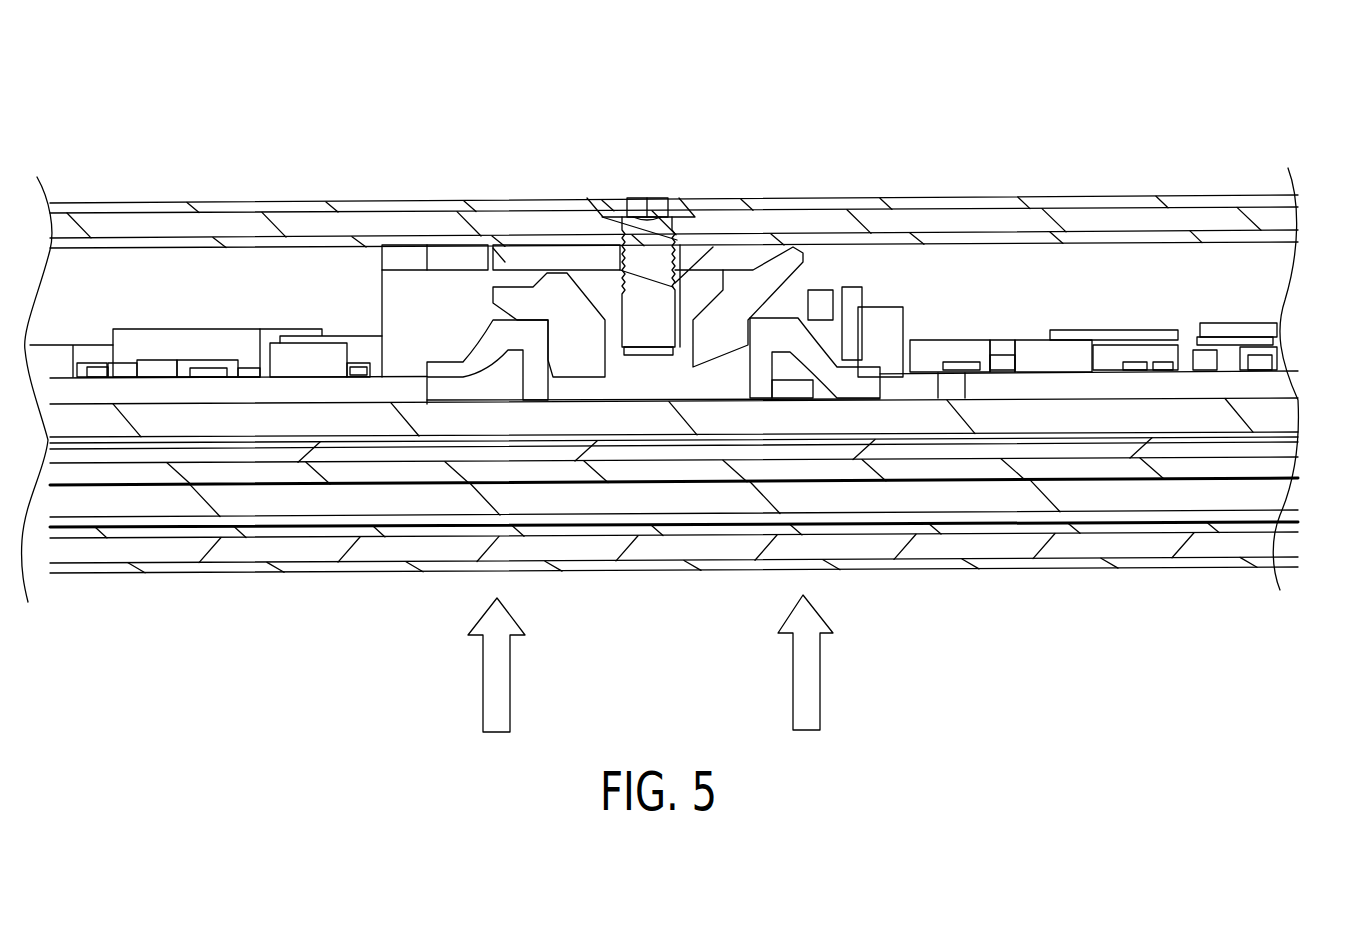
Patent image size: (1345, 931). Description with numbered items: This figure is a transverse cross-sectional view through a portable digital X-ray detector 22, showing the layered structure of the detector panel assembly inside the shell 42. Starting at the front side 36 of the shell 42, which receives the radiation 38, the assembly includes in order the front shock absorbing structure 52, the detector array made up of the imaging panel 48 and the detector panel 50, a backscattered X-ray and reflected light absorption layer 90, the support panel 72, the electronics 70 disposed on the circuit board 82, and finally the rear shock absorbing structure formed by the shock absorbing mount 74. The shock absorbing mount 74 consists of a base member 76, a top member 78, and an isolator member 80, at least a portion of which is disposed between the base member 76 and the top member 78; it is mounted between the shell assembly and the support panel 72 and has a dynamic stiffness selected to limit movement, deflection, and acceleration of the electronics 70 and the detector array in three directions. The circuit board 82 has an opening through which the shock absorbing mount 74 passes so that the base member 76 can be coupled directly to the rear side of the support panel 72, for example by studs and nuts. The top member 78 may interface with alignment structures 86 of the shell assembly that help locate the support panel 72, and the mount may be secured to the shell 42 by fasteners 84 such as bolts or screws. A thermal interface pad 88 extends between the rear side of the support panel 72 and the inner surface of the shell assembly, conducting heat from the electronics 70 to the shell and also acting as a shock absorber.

The detector 22 is at (507, 108).
The front side 36 is at (910, 571).
The radiation 38 is at (768, 659).
The shell 42 is at (1305, 245).
The imaging panel 48 is at (218, 470).
The detector panel 50 is at (172, 453).
The front shock absorbing structure 52 is at (285, 500).
The electronics 70 is at (172, 347).
The support panel 72 is at (1303, 400).
The shock absorbing mount 74 is at (862, 142).
The base member 76 is at (793, 333).
The top member 78 is at (731, 256).
The isolator member 80 is at (752, 298).
The circuit board 82 is at (1122, 383).
The fasteners 84 is at (615, 205).
The alignment structures 86 is at (455, 257).
The thermal interface pad 88 is at (362, 272).
The backscattered X-ray and reflected light absorption layer 90 is at (115, 448).